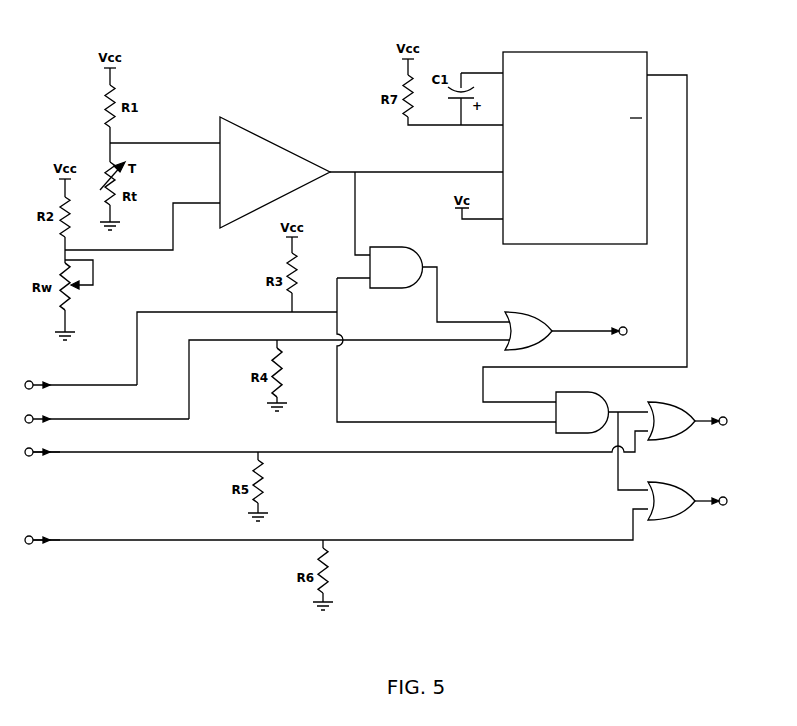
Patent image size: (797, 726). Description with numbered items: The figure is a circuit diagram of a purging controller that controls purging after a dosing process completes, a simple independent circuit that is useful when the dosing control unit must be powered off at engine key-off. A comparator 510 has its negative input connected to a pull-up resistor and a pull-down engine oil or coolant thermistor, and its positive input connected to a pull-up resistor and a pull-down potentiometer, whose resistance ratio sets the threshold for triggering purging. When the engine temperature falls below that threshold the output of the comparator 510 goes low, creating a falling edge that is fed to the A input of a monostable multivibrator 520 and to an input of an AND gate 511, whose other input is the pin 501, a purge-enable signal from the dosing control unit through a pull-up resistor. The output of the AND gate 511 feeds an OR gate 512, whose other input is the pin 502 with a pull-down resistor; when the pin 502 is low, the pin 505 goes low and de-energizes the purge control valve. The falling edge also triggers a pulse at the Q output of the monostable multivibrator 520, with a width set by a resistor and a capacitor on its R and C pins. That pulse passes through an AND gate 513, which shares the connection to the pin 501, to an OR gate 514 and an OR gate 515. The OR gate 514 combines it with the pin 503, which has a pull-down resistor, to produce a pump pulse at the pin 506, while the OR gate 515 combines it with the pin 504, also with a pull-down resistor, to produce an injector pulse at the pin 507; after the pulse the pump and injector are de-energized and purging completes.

The comparator 510 is at (258, 135).
The AND gate 511 is at (388, 247).
The OR gate 512 is at (517, 312).
The AND gate 513 is at (572, 392).
The OR gate 514 is at (658, 402).
The OR gate 515 is at (658, 482).
The monostable multivibrator 520 is at (537, 52).
The pin 501 is at (33, 382).
The pin 502 is at (33, 416).
The pin 503 is at (33, 449).
The pin 504 is at (33, 537).
The pin 505 is at (623, 327).
The pin 506 is at (723, 417).
The pin 507 is at (723, 497).